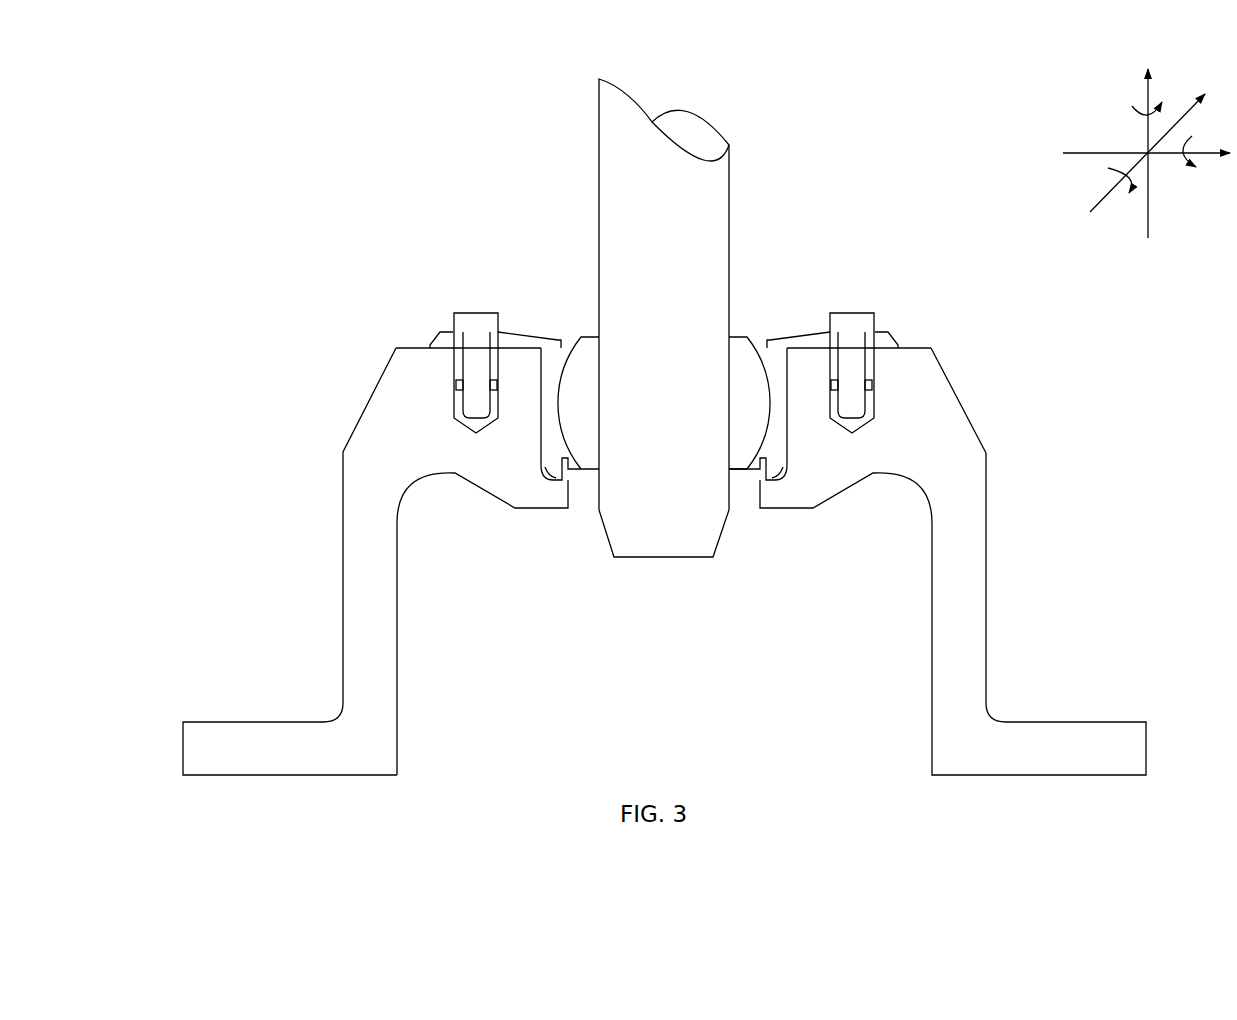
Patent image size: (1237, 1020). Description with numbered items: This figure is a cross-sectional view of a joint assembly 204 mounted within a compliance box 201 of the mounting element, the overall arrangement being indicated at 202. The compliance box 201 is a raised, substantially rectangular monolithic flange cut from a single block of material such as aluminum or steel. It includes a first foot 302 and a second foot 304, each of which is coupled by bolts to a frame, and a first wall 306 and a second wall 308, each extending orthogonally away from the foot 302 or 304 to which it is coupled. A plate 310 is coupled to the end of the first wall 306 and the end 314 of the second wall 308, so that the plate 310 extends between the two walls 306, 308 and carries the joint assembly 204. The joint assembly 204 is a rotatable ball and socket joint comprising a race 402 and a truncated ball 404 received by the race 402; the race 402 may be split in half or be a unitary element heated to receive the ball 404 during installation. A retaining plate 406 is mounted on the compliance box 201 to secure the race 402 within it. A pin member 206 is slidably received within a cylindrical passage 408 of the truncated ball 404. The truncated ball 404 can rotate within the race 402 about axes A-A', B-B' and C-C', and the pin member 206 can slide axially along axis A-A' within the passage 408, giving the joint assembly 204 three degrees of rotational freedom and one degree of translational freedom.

The compliance box 201 is at (964, 400).
The bearing assembly 202 is at (936, 81).
The joint assembly 204 is at (768, 332).
The pin member 206 is at (715, 123).
The first foot 302 is at (960, 363).
The second foot 304 is at (286, 775).
The first wall 306 is at (987, 548).
The second wall 308 is at (341, 540).
The plate 310 is at (919, 345).
The end of second wall 314 is at (398, 347).
The race 402 is at (560, 342).
The truncated ball 404 is at (578, 327).
The retaining plate 406 is at (819, 327).
The cylindrical passage 408 is at (596, 462).